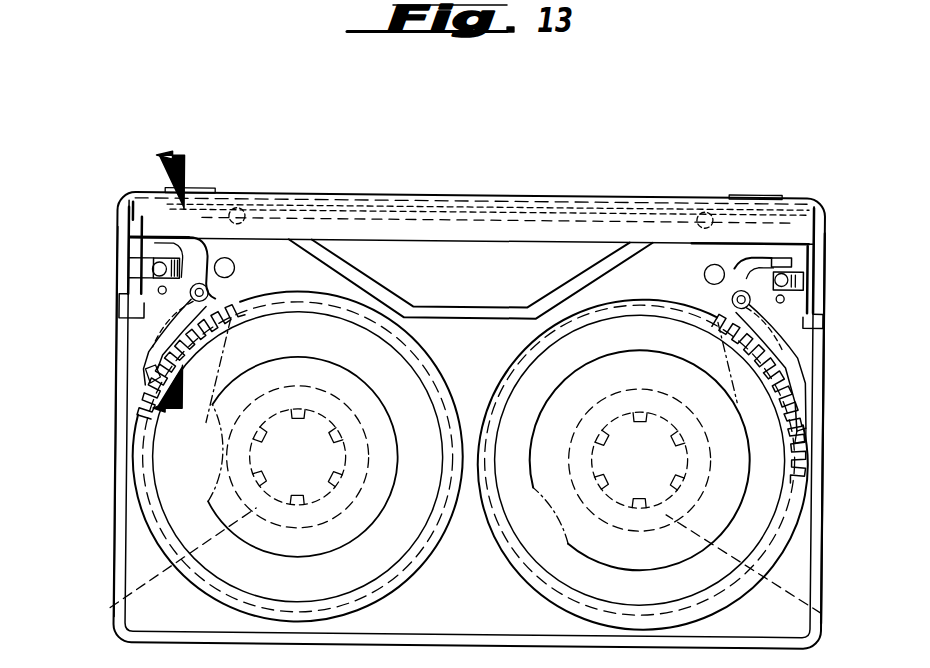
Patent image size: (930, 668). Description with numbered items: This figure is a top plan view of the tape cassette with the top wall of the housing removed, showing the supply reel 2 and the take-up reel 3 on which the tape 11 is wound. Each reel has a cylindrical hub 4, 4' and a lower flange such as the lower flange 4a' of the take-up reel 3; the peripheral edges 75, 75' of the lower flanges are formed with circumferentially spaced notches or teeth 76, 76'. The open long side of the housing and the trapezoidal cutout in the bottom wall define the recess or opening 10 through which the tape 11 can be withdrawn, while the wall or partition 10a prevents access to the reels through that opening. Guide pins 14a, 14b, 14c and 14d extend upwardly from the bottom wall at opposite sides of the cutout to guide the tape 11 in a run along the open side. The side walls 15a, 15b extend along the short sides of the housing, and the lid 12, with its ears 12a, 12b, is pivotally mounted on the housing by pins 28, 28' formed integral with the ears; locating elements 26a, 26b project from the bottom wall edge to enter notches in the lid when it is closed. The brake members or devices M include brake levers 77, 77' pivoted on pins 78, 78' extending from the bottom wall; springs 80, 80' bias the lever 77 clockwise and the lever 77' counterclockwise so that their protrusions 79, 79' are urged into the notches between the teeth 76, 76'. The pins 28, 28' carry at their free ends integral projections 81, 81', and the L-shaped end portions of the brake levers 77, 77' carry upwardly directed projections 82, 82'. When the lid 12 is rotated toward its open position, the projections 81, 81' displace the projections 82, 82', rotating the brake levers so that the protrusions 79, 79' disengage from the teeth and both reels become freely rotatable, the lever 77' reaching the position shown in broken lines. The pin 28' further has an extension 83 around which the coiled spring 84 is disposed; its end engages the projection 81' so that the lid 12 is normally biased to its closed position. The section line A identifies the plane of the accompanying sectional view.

The supply reel 2 is at (756, 626).
The take-up reel 3 is at (428, 628).
The cylindrical hub 4 is at (770, 566).
The cylindrical hub 4' is at (158, 573).
The lower flange 4a' is at (479, 465).
The recess or opening 10 is at (478, 316).
The wall or partition 10a is at (333, 264).
The tape 11 is at (481, 206).
The lid 12 is at (656, 196).
The ear 12a is at (824, 252).
The ear 12b is at (120, 201).
The guide pin 14a is at (283, 240).
The guide pin 14b is at (241, 211).
The guide pin 14c is at (716, 210).
The guide pin 14d is at (710, 300).
The side wall 15a is at (116, 481).
The side wall 15b is at (817, 534).
The locating element 26a is at (760, 195).
The locating element 26b is at (196, 192).
The pin 28 is at (804, 286).
The pin 28' is at (113, 273).
The peripheral edge 75 is at (683, 461).
The peripheral edge 75' is at (255, 457).
The teeth 76 is at (797, 404).
The teeth 76' is at (216, 364).
The brake lever 77 is at (816, 374).
The brake lever 77' is at (125, 378).
The pin 78 is at (739, 259).
The pin 78' is at (243, 277).
The protrusion 79 is at (809, 384).
The protrusion 79' is at (126, 357).
The spring 80 is at (811, 345).
The spring 80' is at (120, 336).
The projection 81 is at (839, 325).
The projection 81' is at (96, 314).
The projection 82 is at (782, 261).
The projection 82' is at (118, 254).
The extension 83 is at (203, 250).
The coiled spring 84 is at (129, 146).
The section line A- A is at (169, 281).
The brake members or devices M is at (32, 383).